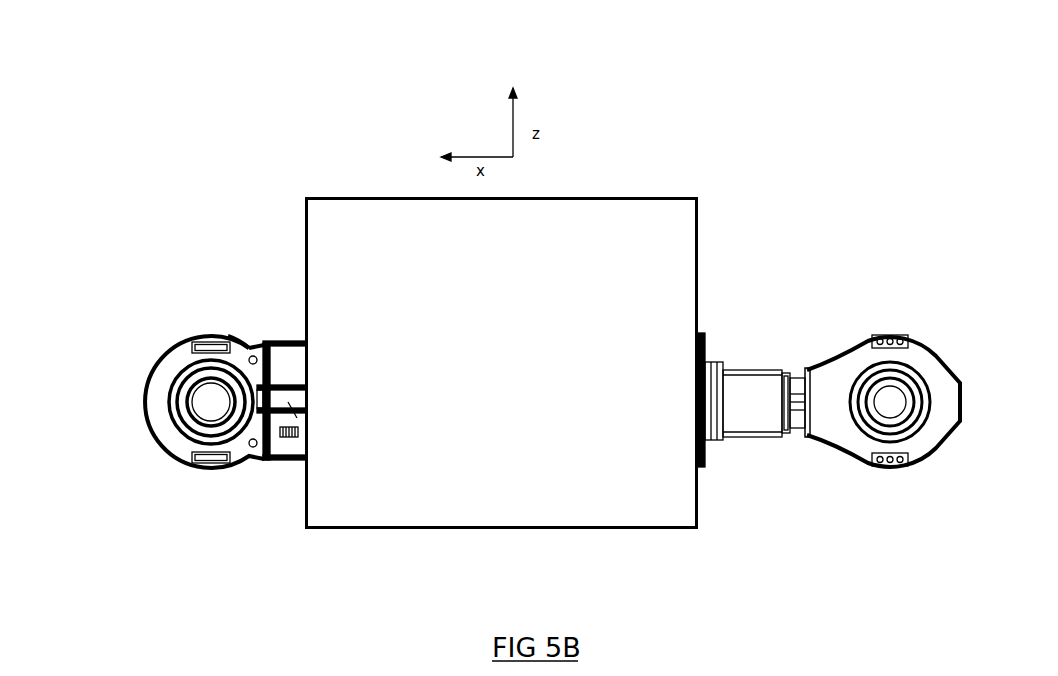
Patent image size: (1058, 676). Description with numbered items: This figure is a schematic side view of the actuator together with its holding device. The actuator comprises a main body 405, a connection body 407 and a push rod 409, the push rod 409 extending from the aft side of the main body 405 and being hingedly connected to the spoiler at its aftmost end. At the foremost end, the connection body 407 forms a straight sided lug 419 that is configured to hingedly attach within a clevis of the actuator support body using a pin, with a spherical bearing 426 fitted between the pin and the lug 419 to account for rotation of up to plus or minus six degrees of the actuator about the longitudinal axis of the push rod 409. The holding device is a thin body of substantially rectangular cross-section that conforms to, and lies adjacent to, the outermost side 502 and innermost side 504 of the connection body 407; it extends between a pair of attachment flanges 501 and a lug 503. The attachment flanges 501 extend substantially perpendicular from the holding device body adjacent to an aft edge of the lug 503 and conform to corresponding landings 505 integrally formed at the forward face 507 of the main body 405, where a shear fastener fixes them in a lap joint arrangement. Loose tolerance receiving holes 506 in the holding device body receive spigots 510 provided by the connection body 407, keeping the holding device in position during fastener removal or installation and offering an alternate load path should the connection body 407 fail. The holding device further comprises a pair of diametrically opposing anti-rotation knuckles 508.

The main body 405 is at (598, 250).
The push rod 409 is at (773, 390).
The lug 419 is at (177, 402).
The spherical bearing 426 is at (163, 432).
The attachment flange 501 is at (258, 385).
The outermost side 502 is at (300, 452).
The lug 503 is at (183, 357).
The innermost side 504 is at (228, 334).
The landing 505 is at (298, 341).
The loose tolerance receiving hole 506 is at (253, 446).
The forward face 507 is at (300, 257).
The anti-rotation knuckle 508 is at (197, 466).
The spigot 510 is at (217, 462).
The connection body 407 is at (278, 457).